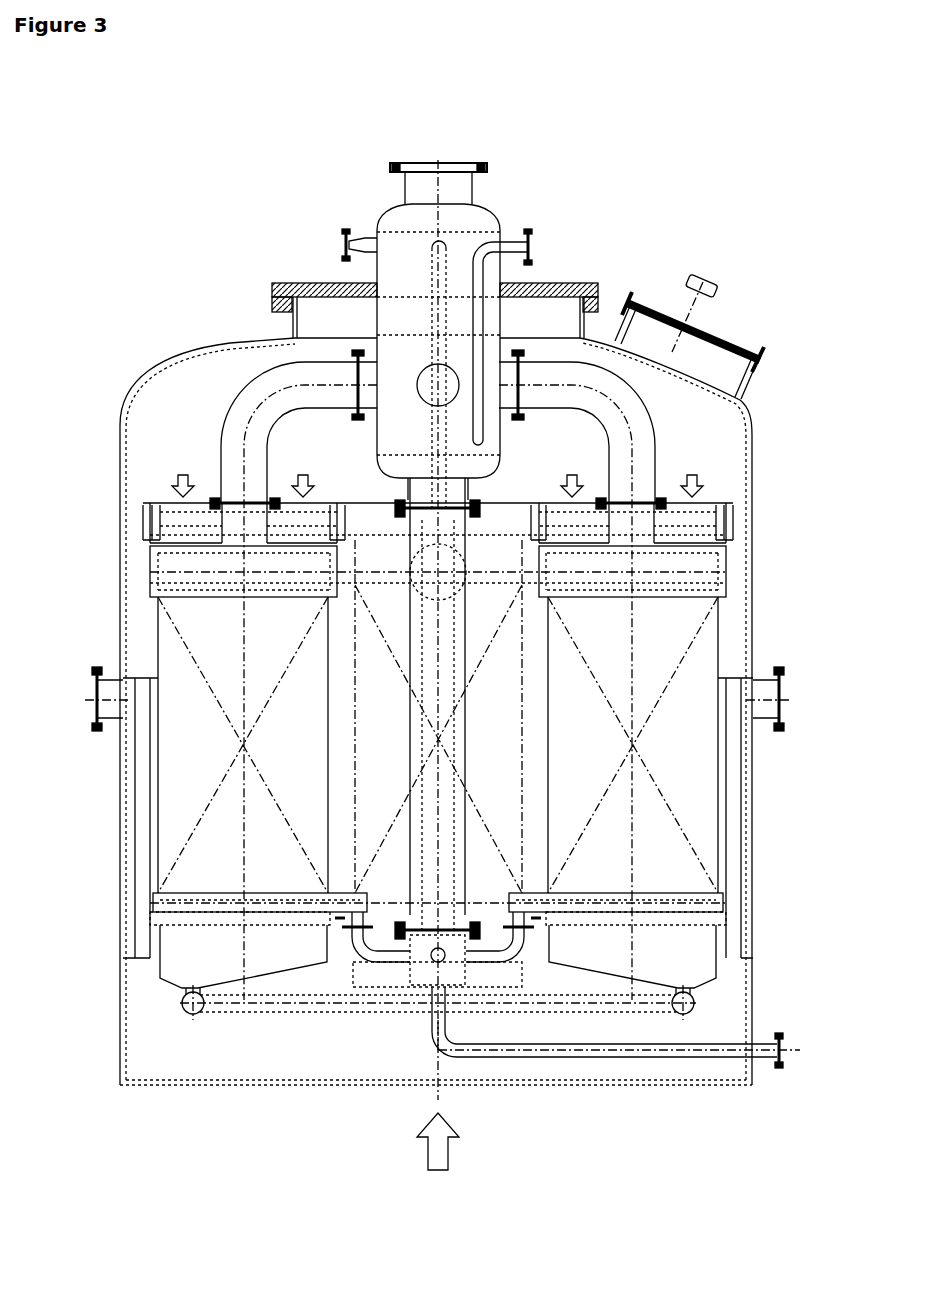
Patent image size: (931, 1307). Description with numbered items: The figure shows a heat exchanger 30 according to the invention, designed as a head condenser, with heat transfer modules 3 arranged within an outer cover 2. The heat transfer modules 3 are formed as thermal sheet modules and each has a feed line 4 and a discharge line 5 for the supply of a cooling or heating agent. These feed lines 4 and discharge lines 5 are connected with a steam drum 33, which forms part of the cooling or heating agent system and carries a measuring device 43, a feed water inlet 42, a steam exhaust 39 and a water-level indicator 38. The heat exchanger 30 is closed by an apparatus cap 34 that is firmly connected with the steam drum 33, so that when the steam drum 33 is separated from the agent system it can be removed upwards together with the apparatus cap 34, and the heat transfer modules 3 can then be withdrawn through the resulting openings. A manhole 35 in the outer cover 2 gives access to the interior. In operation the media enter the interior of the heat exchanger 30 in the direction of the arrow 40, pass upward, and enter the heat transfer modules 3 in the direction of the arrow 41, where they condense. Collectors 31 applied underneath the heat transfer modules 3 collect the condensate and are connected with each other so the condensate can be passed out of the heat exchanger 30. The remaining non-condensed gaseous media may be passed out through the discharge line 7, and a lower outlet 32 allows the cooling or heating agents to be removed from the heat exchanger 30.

The outer cover 2 is at (755, 425).
The heat exchanger 30 is at (175, 357).
The heat transfer modules 3 is at (175, 645).
The feed line 4 is at (327, 938).
The discharge line 5 is at (230, 523).
The discharge line 7 is at (85, 695).
The collectors 31 is at (190, 965).
The lower outlet 32 is at (785, 1052).
The steam drum 33 is at (405, 275).
The apparatus cap 34 is at (312, 283).
The manhole 35 is at (720, 332).
The water-level indicator 38 is at (508, 265).
The steam exhaust 39 is at (455, 163).
The arrow 40 is at (438, 1157).
The arrow 41 is at (439, 473).
The feed water inlet 42 is at (447, 247).
The measuring device 43 is at (362, 238).